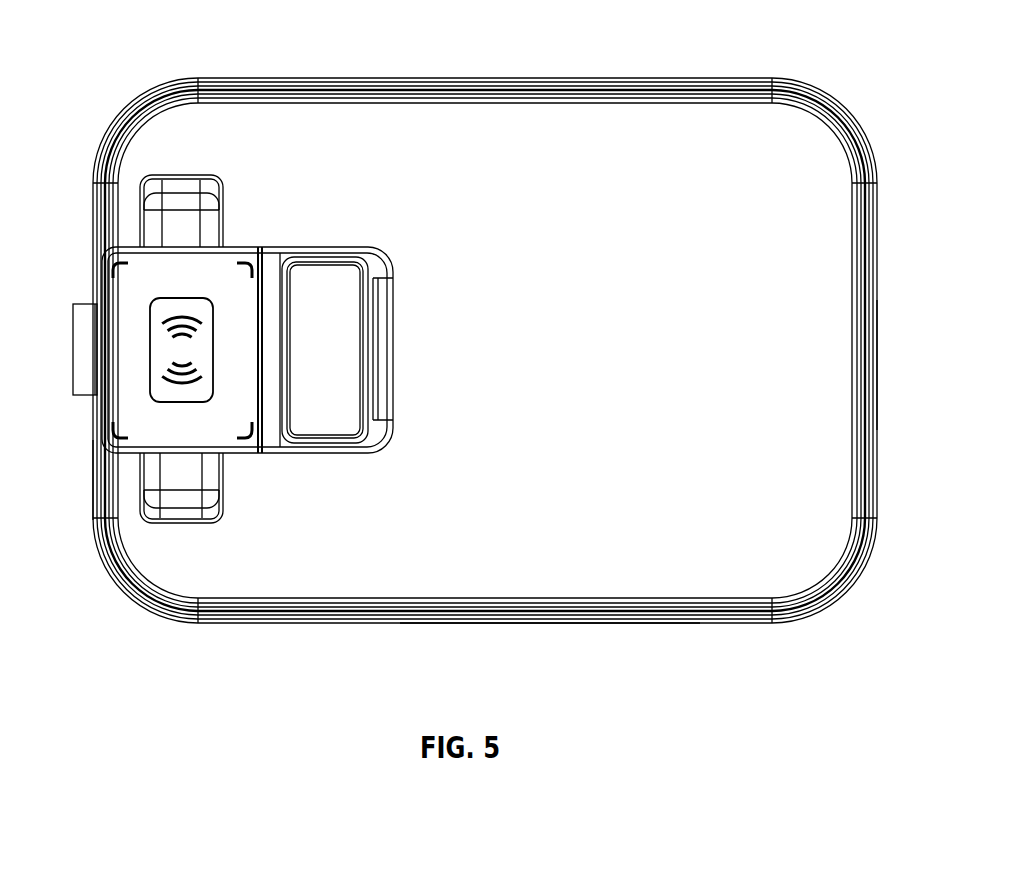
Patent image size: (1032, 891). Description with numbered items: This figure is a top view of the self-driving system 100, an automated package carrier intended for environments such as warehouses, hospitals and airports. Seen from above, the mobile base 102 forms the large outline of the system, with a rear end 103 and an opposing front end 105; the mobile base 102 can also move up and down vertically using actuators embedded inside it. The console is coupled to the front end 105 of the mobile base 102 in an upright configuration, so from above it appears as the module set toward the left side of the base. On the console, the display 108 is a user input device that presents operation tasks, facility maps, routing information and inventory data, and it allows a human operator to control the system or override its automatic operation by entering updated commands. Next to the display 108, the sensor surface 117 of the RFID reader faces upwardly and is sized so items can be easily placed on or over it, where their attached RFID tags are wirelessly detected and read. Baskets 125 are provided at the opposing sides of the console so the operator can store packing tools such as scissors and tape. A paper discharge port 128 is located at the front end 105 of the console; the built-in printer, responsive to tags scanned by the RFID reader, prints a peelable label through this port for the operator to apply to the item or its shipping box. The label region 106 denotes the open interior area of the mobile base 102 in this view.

The self-driving system 100 is at (810, 50).
The mobile base 102 is at (658, 623).
The rear end 103 is at (878, 362).
The front end 105 is at (92, 483).
The interior cavity 106 is at (742, 296).
The display 108 is at (318, 275).
The sensor surface 117 is at (218, 432).
The baskets 125 is at (178, 175).
The paper discharge port 128 is at (73, 350).